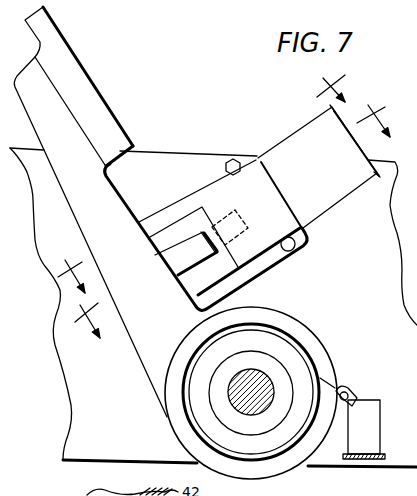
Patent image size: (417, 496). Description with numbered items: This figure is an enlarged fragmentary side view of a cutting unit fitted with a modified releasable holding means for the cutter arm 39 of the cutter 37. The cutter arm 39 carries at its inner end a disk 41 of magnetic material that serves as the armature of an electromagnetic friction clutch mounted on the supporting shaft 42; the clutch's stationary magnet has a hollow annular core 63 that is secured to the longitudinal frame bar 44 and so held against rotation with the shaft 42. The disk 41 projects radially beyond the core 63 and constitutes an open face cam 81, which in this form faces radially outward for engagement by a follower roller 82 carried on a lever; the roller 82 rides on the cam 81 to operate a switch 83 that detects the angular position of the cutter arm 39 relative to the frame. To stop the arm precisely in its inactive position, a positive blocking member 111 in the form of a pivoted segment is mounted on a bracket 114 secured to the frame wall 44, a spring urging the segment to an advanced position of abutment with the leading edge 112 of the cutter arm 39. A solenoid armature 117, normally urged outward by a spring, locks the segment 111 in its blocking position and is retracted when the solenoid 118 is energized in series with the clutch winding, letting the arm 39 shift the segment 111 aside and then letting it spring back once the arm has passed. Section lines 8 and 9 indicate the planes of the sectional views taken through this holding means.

The section line 8- 8 is at (201, 184).
The section line 9- 9 is at (227, 213).
The cutter 37 is at (51, 5).
The cutter arm 39 is at (118, 198).
The disk 41 is at (321, 345).
The shaft 42 is at (244, 377).
The longitudinal frame bar 44 is at (77, 390).
The clutch core 63 is at (254, 453).
The cam 81 is at (320, 432).
The follower roller 82 is at (350, 388).
The switch 83 is at (374, 427).
The blocking member 111 is at (177, 267).
The leading edge 112 is at (178, 268).
The bracket 114 is at (279, 259).
The solenoid armature 117 is at (219, 247).
The solenoid 118 is at (322, 202).